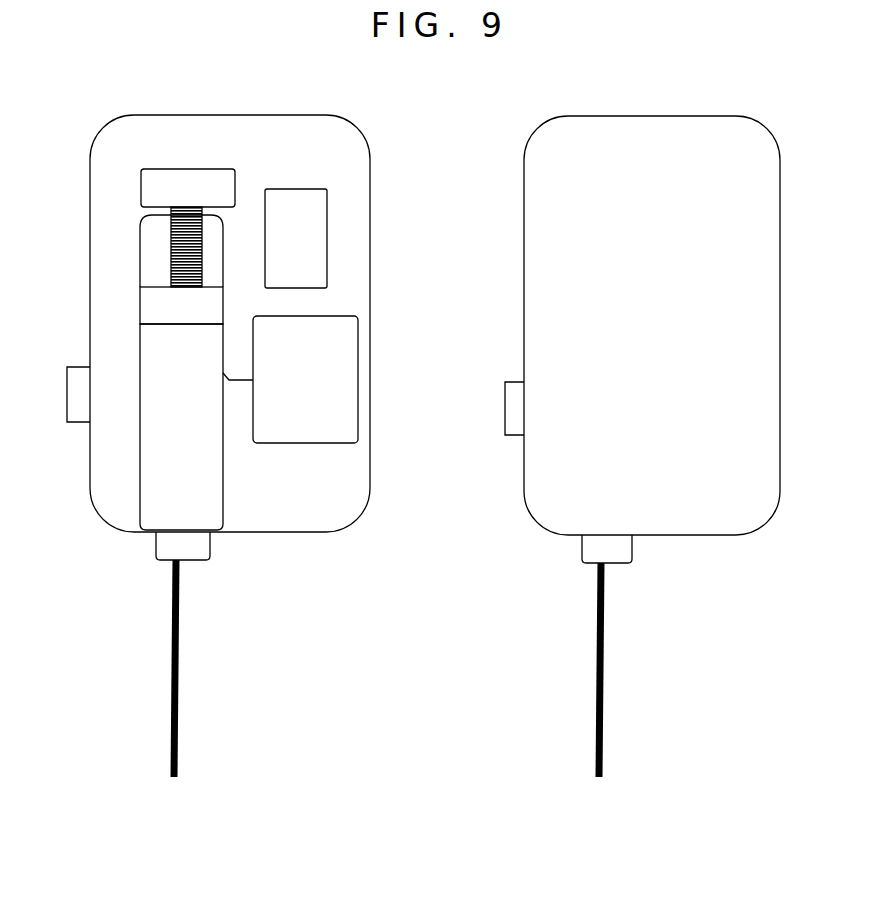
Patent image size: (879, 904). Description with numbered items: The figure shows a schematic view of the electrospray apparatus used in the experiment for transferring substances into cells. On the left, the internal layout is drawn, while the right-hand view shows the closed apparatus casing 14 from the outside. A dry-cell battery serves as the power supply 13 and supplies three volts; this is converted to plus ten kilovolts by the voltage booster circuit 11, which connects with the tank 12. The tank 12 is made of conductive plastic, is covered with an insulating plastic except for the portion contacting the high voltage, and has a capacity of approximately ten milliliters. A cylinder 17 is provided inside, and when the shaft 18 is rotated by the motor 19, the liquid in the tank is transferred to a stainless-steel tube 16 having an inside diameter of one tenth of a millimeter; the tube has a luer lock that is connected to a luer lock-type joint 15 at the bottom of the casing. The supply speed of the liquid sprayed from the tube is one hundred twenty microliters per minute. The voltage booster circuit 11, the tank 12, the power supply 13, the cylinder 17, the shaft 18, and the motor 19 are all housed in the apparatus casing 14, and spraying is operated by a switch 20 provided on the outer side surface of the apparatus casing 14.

The voltage booster circuit 11 is at (305, 379).
The tank 12 is at (196, 427).
The power supply 13 is at (296, 238).
The apparatus casing 14 is at (435, 325).
The luer lock-type joint 15 is at (413, 550).
The stainless-steel tube 16 is at (410, 668).
The cylinder 17 is at (181, 305).
The shaft 18 is at (162, 252).
The motor 19 is at (188, 188).
The switch 20 is at (276, 401).